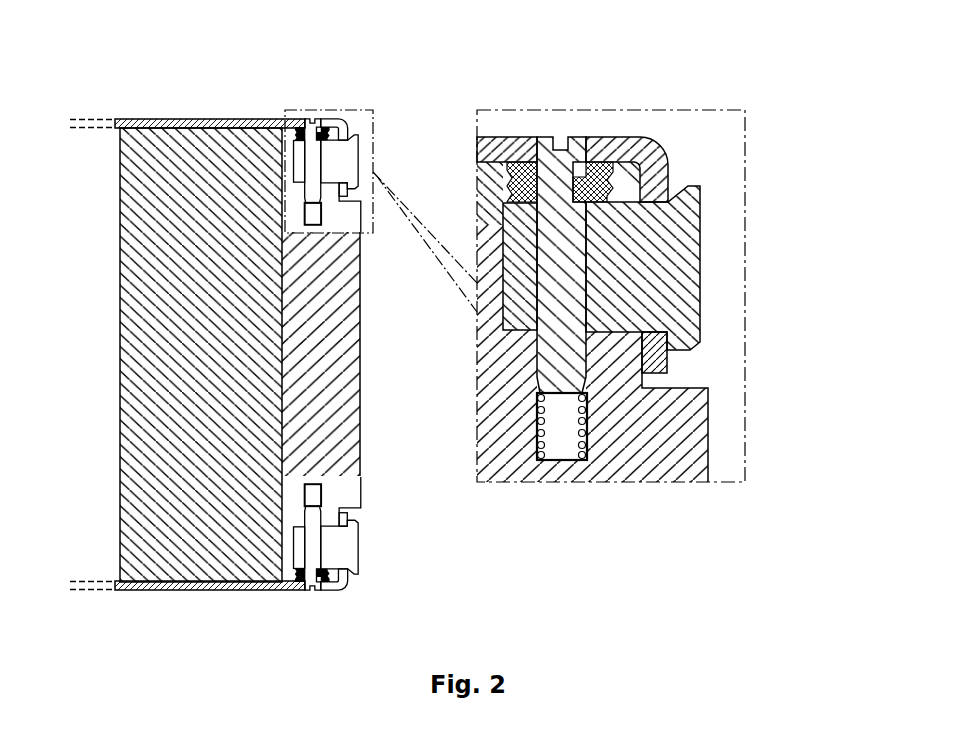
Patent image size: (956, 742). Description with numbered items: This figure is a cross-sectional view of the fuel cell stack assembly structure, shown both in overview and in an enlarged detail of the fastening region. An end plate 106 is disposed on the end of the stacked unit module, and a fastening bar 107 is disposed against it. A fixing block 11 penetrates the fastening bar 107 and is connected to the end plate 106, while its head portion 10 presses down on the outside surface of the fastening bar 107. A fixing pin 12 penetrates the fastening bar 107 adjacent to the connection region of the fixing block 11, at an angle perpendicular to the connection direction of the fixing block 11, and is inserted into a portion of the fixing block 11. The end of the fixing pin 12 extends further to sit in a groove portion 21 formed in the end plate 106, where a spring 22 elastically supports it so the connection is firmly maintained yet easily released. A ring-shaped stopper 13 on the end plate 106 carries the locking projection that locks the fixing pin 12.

The head portion 10 is at (693, 186).
The fixing block 11 is at (712, 210).
The fixing pin 12 is at (528, 248).
The ring-shaped stopper 13 is at (524, 141).
The groove portion 21 is at (553, 443).
The spring 22 is at (571, 432).
The end plate 106 is at (692, 433).
The fastening bar 107 is at (603, 141).